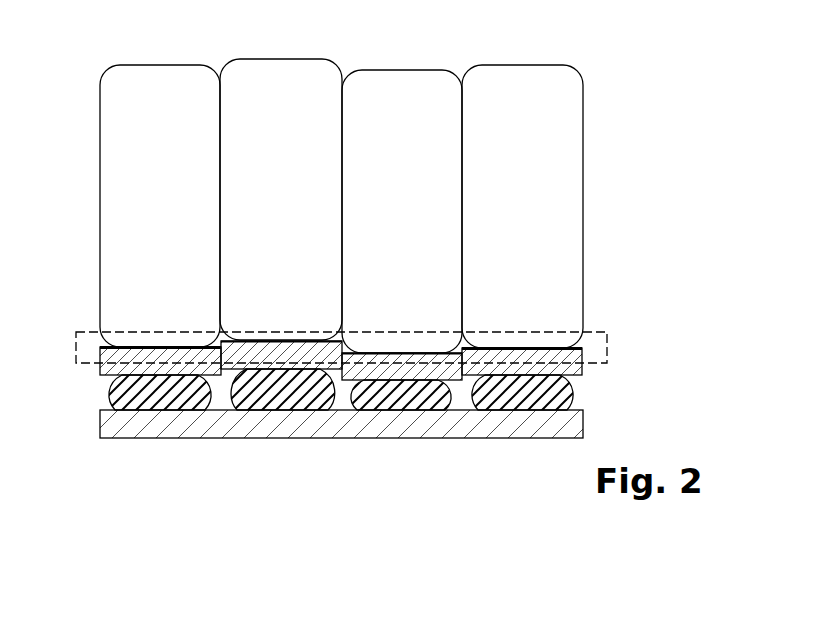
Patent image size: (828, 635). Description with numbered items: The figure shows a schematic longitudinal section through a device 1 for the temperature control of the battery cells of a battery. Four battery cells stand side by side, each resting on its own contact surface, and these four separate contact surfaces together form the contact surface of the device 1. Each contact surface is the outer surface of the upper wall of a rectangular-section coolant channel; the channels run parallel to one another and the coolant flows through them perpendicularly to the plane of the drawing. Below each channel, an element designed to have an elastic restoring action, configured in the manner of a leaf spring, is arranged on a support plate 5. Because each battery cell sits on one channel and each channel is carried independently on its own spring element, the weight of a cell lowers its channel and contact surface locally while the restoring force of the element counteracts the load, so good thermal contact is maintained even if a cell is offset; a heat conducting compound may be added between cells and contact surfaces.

The device 1 is at (598, 388).
The support plate 5 is at (100, 423).